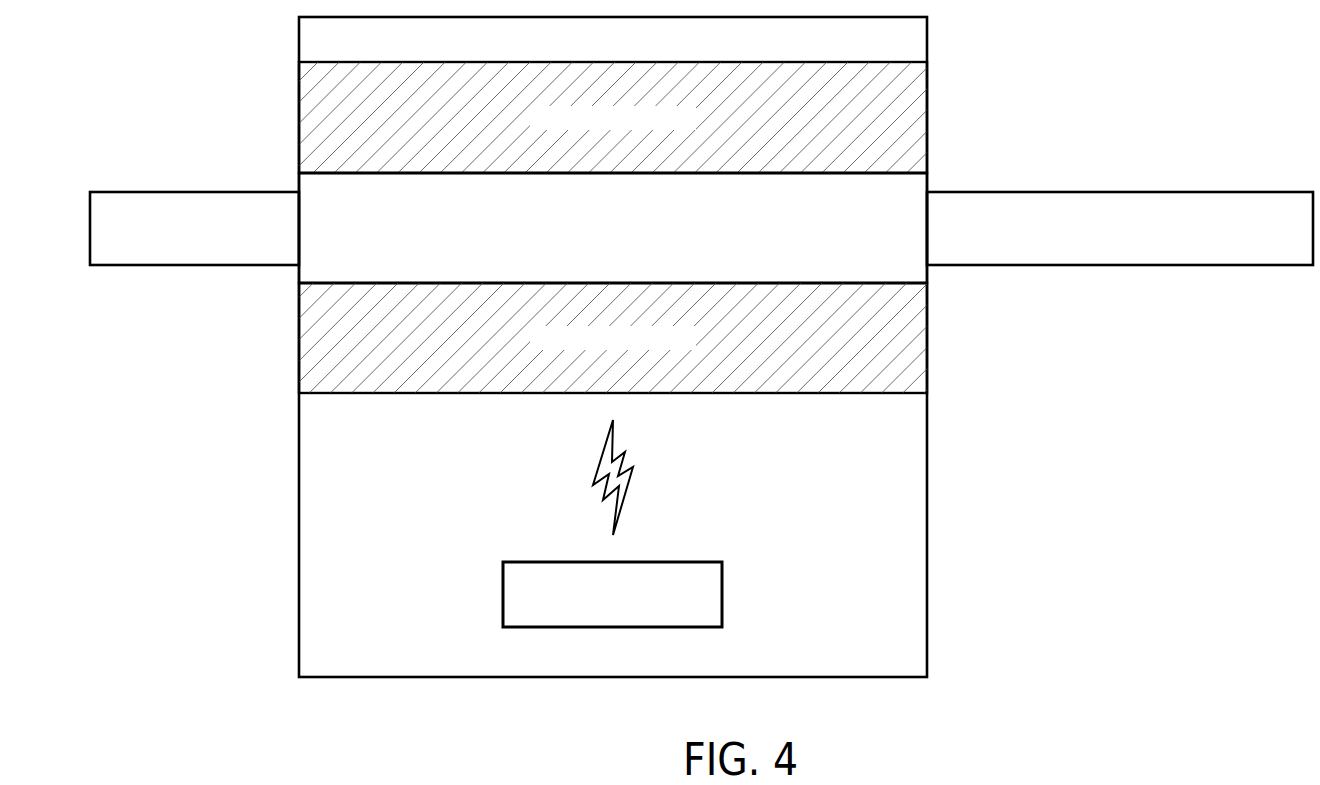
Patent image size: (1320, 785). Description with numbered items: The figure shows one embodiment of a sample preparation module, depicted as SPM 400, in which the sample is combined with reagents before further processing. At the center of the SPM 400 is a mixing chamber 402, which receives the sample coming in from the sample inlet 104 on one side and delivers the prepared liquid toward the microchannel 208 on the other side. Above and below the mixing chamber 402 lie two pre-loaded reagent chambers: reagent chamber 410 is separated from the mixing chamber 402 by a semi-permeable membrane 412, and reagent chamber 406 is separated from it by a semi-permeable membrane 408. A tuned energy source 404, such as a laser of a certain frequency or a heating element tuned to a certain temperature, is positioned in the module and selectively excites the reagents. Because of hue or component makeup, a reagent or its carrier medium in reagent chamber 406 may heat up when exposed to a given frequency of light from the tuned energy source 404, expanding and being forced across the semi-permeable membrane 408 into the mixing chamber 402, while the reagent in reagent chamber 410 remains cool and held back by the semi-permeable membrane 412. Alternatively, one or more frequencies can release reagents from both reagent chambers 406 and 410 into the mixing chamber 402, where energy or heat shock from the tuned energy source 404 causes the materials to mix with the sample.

The sample inlet 104 is at (177, 192).
The microchannel 208 is at (1155, 192).
The sample preparation module 400 is at (395, 636).
The mixing chamber 402 is at (768, 242).
The tuned energy source 404 is at (722, 593).
The reagent chamber 406 is at (888, 348).
The semi-permeable membrane 408 is at (927, 283).
The reagent chamber 410 is at (888, 98).
The semi-permeable membrane 412 is at (927, 173).